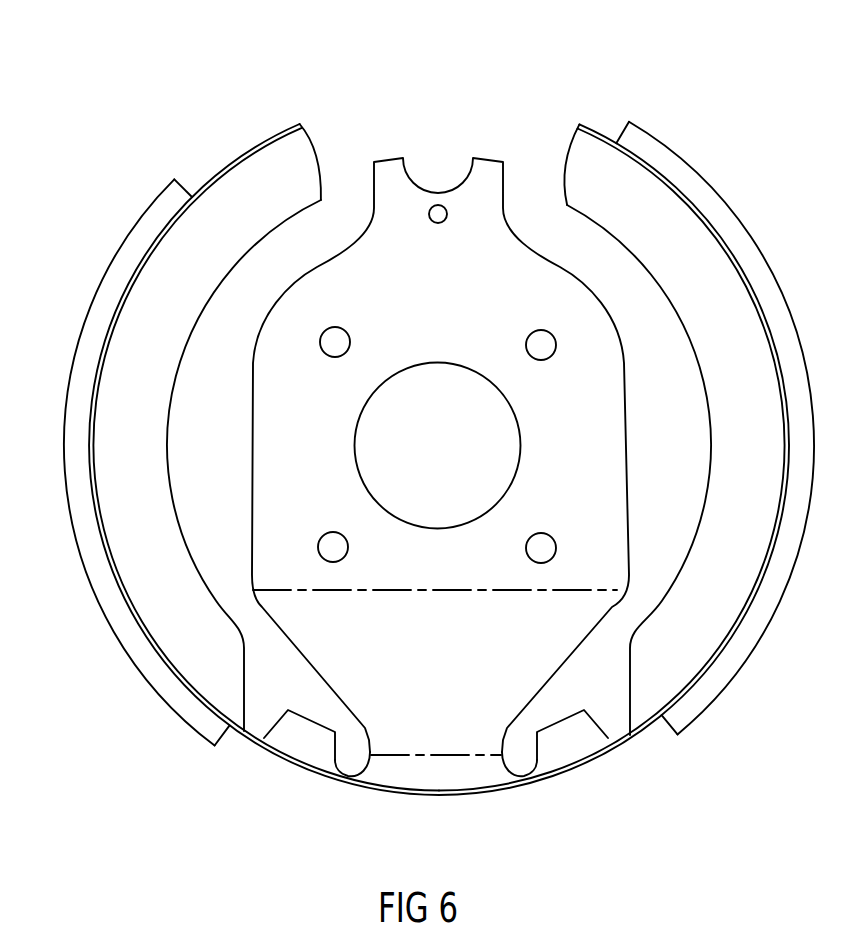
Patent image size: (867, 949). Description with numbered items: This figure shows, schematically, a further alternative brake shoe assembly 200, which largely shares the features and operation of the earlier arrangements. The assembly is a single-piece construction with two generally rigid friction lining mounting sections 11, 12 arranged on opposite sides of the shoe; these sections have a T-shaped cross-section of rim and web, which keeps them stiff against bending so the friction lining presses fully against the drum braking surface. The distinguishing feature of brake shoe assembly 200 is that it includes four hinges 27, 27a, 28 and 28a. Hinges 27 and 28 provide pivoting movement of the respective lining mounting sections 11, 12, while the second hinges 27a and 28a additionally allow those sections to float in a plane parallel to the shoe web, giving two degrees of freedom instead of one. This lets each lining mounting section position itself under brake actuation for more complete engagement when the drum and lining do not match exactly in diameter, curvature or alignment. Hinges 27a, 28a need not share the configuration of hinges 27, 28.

The brake shoe assembly 200 is at (150, 110).
The friction lining mounting section 11 is at (143, 587).
The friction lining mounting section 12 is at (672, 225).
The hinge 27 is at (266, 735).
The hinge 27a is at (352, 777).
The hinge 28 is at (626, 742).
The hinge 28a is at (518, 770).